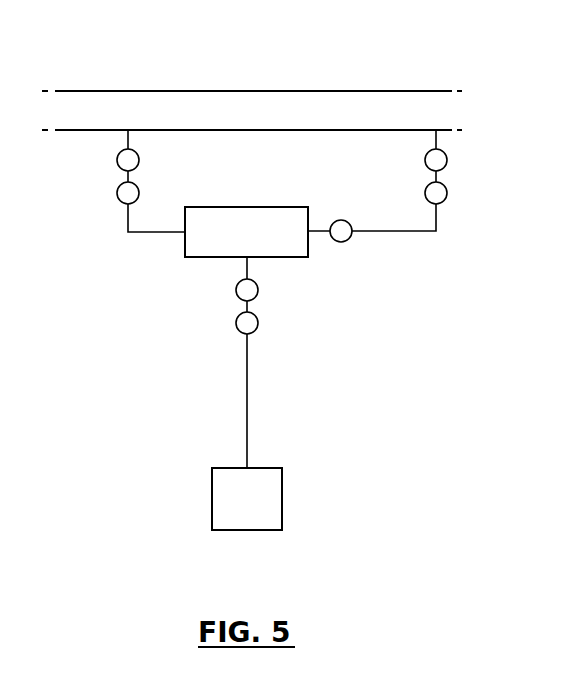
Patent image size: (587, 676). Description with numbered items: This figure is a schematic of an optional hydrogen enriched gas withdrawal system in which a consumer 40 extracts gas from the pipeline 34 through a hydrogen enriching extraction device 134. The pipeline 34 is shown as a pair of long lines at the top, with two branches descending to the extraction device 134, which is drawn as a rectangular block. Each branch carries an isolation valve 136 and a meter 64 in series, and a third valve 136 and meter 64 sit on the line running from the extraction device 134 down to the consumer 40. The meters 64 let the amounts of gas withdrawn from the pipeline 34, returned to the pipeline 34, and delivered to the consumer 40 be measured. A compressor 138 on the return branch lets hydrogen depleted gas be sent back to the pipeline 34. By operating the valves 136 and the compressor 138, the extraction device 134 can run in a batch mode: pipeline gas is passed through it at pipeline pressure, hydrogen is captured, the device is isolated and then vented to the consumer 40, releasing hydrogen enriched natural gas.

The pipeline 34 is at (359, 91).
The isolation valves 136 is at (117, 160).
The meters 64 is at (117, 194).
The hydrogen enriching extraction device 134 is at (197, 257).
The compressor 138 is at (348, 239).
The consumer 40 is at (282, 500).